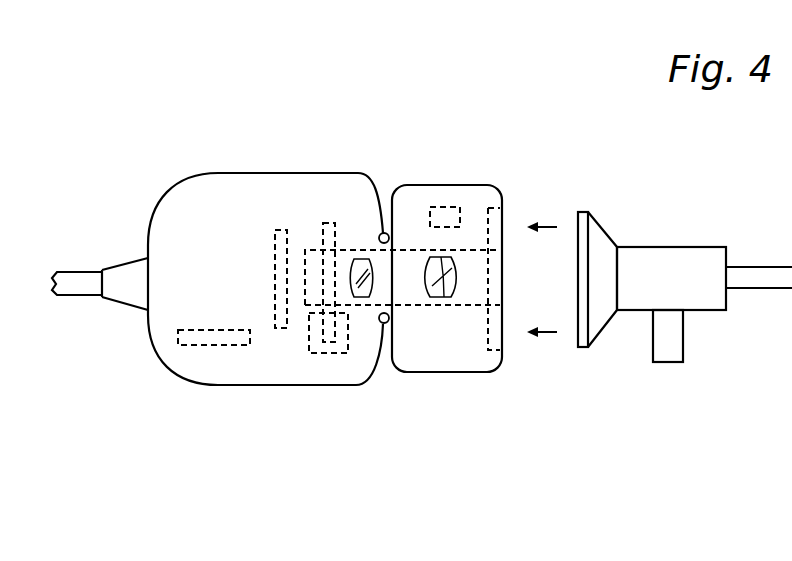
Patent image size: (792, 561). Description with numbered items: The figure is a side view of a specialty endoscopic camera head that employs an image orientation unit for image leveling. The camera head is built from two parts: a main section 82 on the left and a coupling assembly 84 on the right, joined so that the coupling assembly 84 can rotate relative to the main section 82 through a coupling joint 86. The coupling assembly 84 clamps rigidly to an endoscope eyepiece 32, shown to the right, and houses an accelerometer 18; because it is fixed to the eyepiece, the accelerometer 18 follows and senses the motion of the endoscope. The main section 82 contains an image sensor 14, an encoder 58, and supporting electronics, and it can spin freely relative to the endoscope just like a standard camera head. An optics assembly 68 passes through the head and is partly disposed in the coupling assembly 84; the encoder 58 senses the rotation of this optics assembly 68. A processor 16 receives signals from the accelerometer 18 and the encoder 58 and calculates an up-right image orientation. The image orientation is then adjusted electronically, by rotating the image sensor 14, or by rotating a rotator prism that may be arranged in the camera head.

The image sensor 14 is at (274, 281).
The processor 16 is at (190, 330).
The accelerometer 18 is at (445, 207).
The endoscope eyepiece 32 is at (603, 238).
The encoder 58 is at (323, 238).
The optics assembly 68 is at (418, 305).
The main section 82 is at (262, 385).
The coupling assembly 84 is at (468, 372).
The coupling joint 86 is at (384, 232).